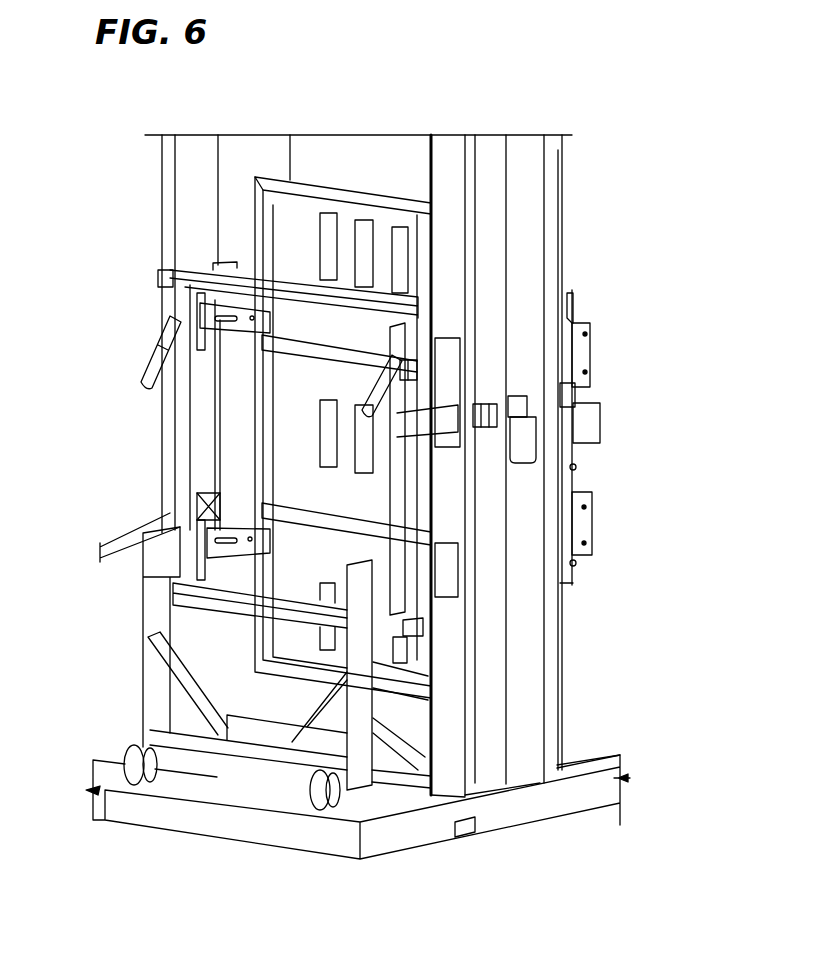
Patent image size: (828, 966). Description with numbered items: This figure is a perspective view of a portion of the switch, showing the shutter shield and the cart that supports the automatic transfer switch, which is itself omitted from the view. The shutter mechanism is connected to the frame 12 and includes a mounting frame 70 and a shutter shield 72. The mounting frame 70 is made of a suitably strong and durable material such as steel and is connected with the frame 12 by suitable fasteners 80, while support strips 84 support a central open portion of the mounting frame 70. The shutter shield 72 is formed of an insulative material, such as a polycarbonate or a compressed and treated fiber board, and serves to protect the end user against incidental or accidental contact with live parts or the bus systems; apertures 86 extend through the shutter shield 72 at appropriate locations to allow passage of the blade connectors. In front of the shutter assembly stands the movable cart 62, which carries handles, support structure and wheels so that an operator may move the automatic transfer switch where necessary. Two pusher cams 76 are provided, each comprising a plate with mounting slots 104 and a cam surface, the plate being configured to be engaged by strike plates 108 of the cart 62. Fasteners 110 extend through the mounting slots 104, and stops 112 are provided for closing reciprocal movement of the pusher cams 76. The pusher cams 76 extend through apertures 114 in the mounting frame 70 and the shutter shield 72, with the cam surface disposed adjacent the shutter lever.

The frame 12 is at (533, 268).
The movable cart 62 is at (143, 607).
The mounting frame 70 is at (302, 193).
The shutter shield 72 is at (295, 233).
The pusher cams 76 is at (205, 330).
The fasteners 80 is at (162, 172).
The support strips 84 is at (262, 340).
The apertures 86 is at (398, 228).
The mounting slots 104 is at (228, 315).
The strike plates 108 is at (165, 270).
The fasteners 110 is at (222, 543).
The stops 112 is at (240, 541).
The apertures 114 is at (250, 540).